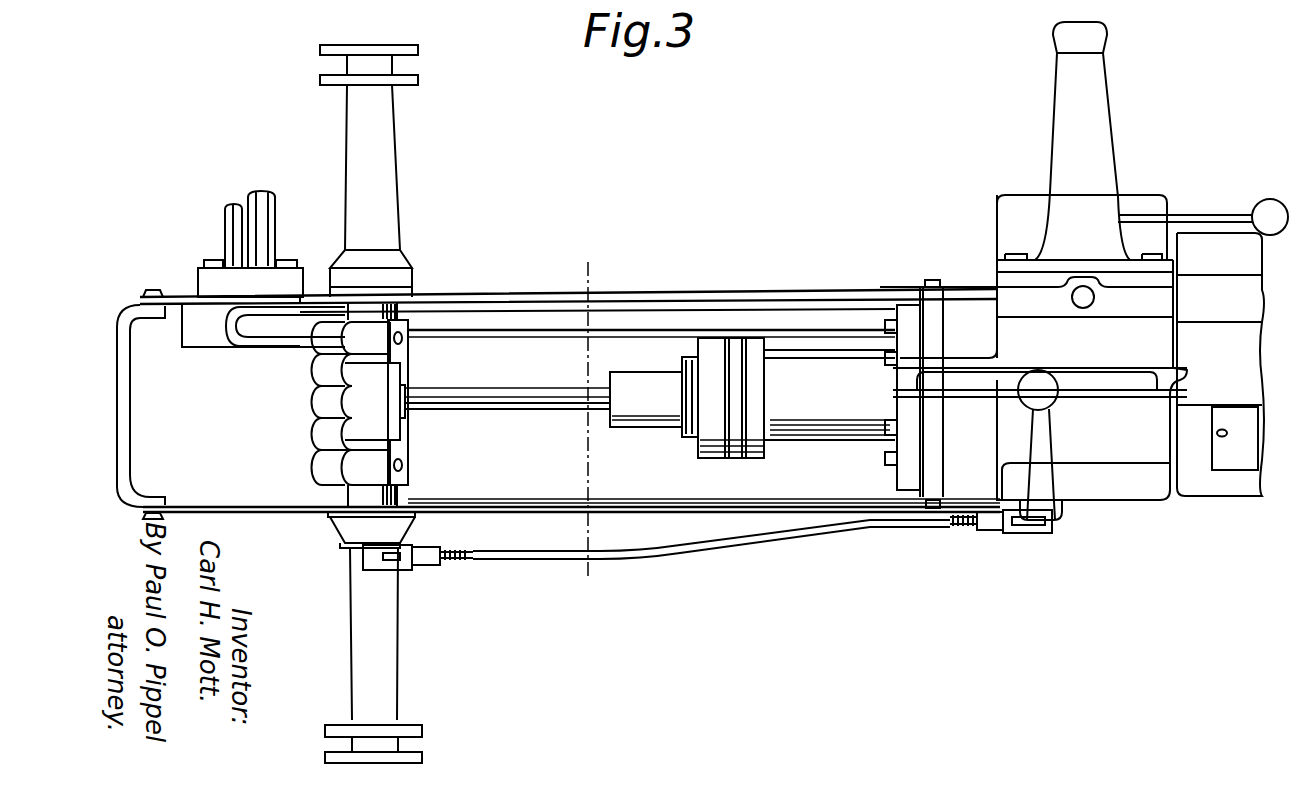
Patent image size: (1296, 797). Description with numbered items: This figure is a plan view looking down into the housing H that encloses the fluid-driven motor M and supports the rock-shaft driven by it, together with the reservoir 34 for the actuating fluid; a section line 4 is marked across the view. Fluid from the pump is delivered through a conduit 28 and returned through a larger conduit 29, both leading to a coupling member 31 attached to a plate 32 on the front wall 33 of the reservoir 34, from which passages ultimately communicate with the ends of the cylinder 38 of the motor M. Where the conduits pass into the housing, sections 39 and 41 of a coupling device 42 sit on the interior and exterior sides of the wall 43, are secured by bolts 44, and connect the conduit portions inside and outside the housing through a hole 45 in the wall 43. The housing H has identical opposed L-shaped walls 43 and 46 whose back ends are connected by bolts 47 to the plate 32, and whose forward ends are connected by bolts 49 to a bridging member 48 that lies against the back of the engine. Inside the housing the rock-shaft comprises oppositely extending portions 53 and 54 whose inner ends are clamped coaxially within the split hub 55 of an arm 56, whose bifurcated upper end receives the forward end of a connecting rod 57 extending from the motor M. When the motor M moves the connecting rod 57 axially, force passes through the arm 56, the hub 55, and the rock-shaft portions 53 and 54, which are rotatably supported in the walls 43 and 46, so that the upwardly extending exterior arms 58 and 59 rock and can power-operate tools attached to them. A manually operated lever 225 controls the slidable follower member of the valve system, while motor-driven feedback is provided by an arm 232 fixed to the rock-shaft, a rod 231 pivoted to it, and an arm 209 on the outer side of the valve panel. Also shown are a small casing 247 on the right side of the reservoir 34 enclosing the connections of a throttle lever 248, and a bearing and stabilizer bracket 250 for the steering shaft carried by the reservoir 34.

The section line 4- 4 is at (600, 265).
The conduit 28 is at (225, 220).
The conduit 29 is at (276, 214).
The coupling member 31 is at (905, 302).
The plate 32 is at (924, 300).
The front wall 33 is at (958, 296).
The reservoir 34 is at (1098, 356).
The cylinder 38 is at (822, 440).
The section 39 is at (206, 345).
The section 41 is at (205, 284).
The coupling device 42 is at (178, 343).
The wall 43 is at (462, 294).
The bolts 44 is at (212, 260).
The hole 45 is at (292, 302).
The wall 46 is at (498, 510).
The bolts 47 is at (932, 280).
The bridging member 48 is at (124, 433).
The bolts 49 is at (150, 292).
The rock-shaft portion 53 is at (386, 306).
The rock-shaft portion 54 is at (345, 497).
The split hub 55 is at (410, 364).
The arm 56 is at (410, 420).
The connecting rod 57 is at (488, 414).
The arm 58 is at (383, 123).
The arm 59 is at (383, 660).
The housing H is at (690, 285).
The motor M is at (790, 445).
The arm 209 is at (1055, 526).
The lever 225 is at (1045, 445).
The rod 231 is at (612, 555).
The arm 232 is at (370, 556).
The casing 247 is at (1012, 200).
The throttle lever 248 is at (1205, 214).
The bearing and stabilizer bracket 250 is at (1063, 110).